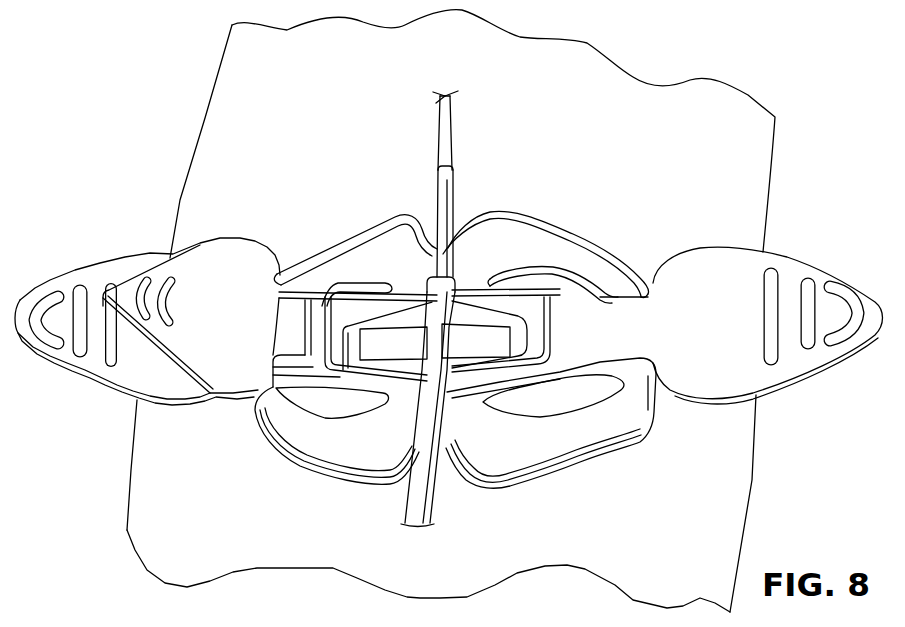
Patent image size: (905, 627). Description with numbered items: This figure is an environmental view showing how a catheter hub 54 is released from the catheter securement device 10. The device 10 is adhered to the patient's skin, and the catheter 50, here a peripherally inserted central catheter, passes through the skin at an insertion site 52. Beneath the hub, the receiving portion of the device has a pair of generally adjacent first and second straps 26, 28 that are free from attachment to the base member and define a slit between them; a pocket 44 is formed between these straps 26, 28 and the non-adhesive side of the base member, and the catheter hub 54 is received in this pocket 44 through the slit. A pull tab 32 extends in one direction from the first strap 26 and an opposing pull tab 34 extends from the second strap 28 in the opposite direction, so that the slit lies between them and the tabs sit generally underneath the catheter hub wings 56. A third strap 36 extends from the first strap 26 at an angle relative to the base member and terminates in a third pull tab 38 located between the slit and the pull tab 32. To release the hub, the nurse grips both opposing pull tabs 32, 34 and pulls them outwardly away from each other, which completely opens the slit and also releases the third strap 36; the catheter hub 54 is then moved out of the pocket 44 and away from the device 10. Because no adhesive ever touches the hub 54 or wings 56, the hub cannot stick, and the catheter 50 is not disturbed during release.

The catheter securement device 10 is at (684, 434).
The first strap 26 is at (312, 362).
The second strap 28 is at (570, 367).
The pull tab 32 is at (90, 367).
The pull tab 34 is at (790, 254).
The third strap 36 is at (295, 308).
The third pull tab 38 is at (205, 261).
The pocket 44 is at (375, 385).
The catheter 50 is at (452, 137).
The insertion site 52 is at (447, 92).
The catheter hub 54 is at (452, 308).
The catheter hub wings 56 is at (387, 314).